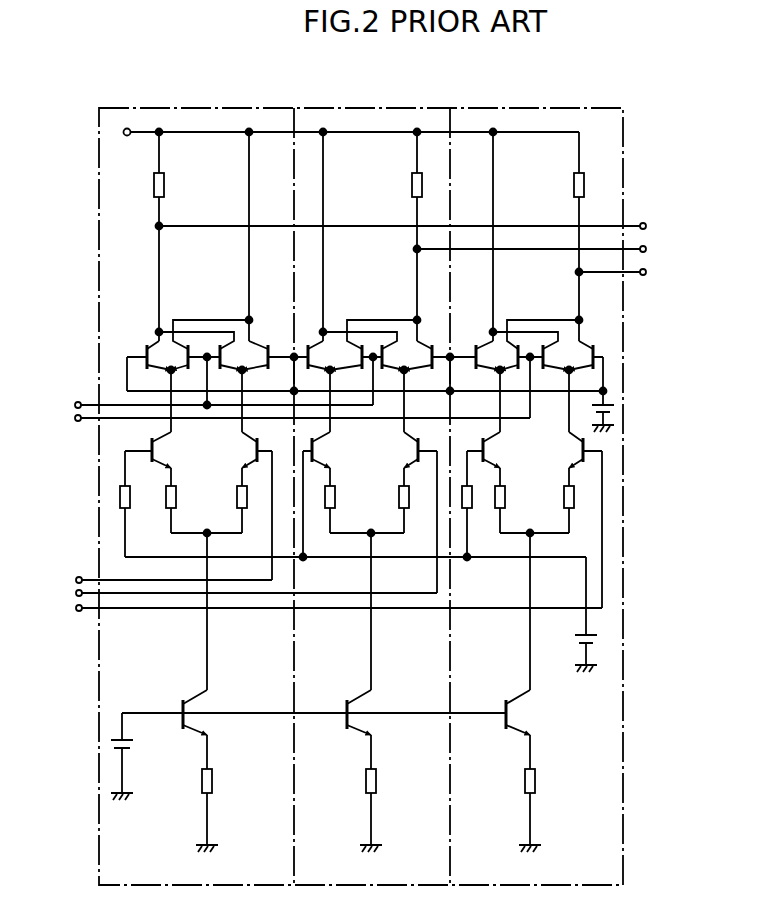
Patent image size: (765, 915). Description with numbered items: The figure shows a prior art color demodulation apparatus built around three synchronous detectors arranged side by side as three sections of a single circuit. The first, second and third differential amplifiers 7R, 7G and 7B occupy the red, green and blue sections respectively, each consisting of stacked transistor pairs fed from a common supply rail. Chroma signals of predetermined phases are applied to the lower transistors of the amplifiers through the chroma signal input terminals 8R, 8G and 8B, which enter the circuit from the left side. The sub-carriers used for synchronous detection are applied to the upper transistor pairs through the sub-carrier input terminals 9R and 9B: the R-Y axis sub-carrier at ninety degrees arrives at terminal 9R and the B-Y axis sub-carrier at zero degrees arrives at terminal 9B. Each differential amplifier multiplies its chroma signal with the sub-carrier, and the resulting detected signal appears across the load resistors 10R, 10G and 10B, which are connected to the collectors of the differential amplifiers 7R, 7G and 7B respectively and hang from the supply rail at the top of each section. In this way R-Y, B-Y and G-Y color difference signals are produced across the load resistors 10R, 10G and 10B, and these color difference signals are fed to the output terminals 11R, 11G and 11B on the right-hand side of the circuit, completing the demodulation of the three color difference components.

The first differential amplifier 7R is at (257, 108).
The second differential amplifier 7G is at (408, 108).
The third differential amplifier 7B is at (563, 108).
The load resistor 10R is at (165, 184).
The load resistor 10G is at (411, 182).
The load resistor 10B is at (573, 182).
The output terminal 11R is at (646, 226).
The output terminal 11G is at (646, 249).
The output terminal 11B is at (646, 272).
The sub-carrier input terminal 9R is at (76, 402).
The sub-carrier input terminal 9B is at (76, 421).
The chroma signal input terminal 8R is at (78, 577).
The chroma signal input terminal 8G is at (76, 593).
The chroma signal input terminal 8B is at (76, 610).